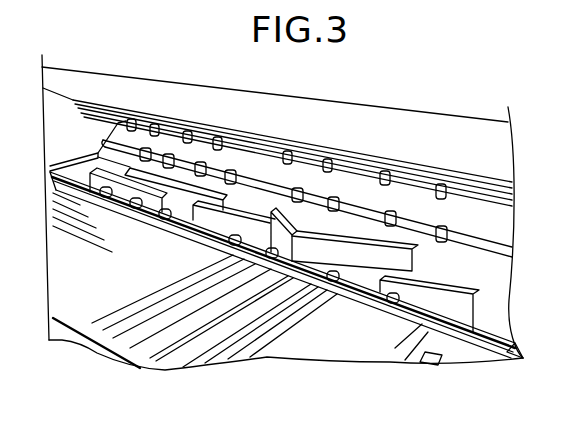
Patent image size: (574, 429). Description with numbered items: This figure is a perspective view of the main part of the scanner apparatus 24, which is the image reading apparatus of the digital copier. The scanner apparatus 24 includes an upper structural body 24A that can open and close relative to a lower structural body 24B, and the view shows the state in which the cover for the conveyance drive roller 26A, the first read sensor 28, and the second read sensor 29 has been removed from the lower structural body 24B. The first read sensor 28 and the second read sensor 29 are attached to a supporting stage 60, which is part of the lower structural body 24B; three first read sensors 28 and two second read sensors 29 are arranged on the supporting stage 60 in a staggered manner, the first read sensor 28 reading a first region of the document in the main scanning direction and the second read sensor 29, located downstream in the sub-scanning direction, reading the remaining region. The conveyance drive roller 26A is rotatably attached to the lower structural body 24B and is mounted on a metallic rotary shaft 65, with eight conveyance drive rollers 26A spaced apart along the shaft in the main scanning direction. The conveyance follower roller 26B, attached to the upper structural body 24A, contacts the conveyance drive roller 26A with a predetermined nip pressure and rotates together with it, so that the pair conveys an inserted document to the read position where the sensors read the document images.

The scanner apparatus 24 is at (178, 364).
The upper structural body 24A is at (502, 154).
The lower structural body 24B is at (452, 355).
The conveyance drive roller 26A is at (153, 228).
The conveyance follower roller 26B is at (222, 145).
The first read sensor 28 is at (126, 193).
The second read sensor 29 is at (190, 185).
The supporting stage 60 is at (78, 166).
The rotary shaft 65 is at (512, 346).